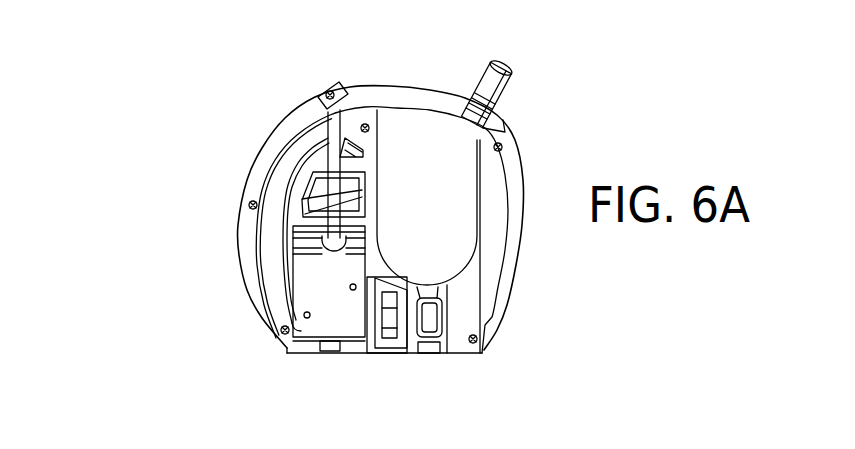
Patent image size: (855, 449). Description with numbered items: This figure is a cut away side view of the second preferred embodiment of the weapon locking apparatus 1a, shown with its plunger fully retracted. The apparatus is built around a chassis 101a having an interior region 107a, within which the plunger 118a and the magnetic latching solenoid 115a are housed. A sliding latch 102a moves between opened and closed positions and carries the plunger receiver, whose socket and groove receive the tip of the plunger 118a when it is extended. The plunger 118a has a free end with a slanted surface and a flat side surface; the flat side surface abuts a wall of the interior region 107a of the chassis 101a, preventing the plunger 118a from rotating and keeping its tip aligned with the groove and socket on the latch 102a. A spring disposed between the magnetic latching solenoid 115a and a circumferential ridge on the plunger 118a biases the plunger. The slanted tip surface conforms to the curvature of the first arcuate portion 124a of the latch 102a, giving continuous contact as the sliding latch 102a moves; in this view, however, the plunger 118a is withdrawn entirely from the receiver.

The weapon locking apparatus 1a is at (150, 124).
The chassis 101a is at (256, 304).
The sliding latch 102a is at (407, 86).
The interior region 107a is at (326, 146).
The plunger 118a is at (300, 211).
The first arcuate portion 124a is at (397, 110).
The magnetic latching solenoid 115a is at (322, 318).